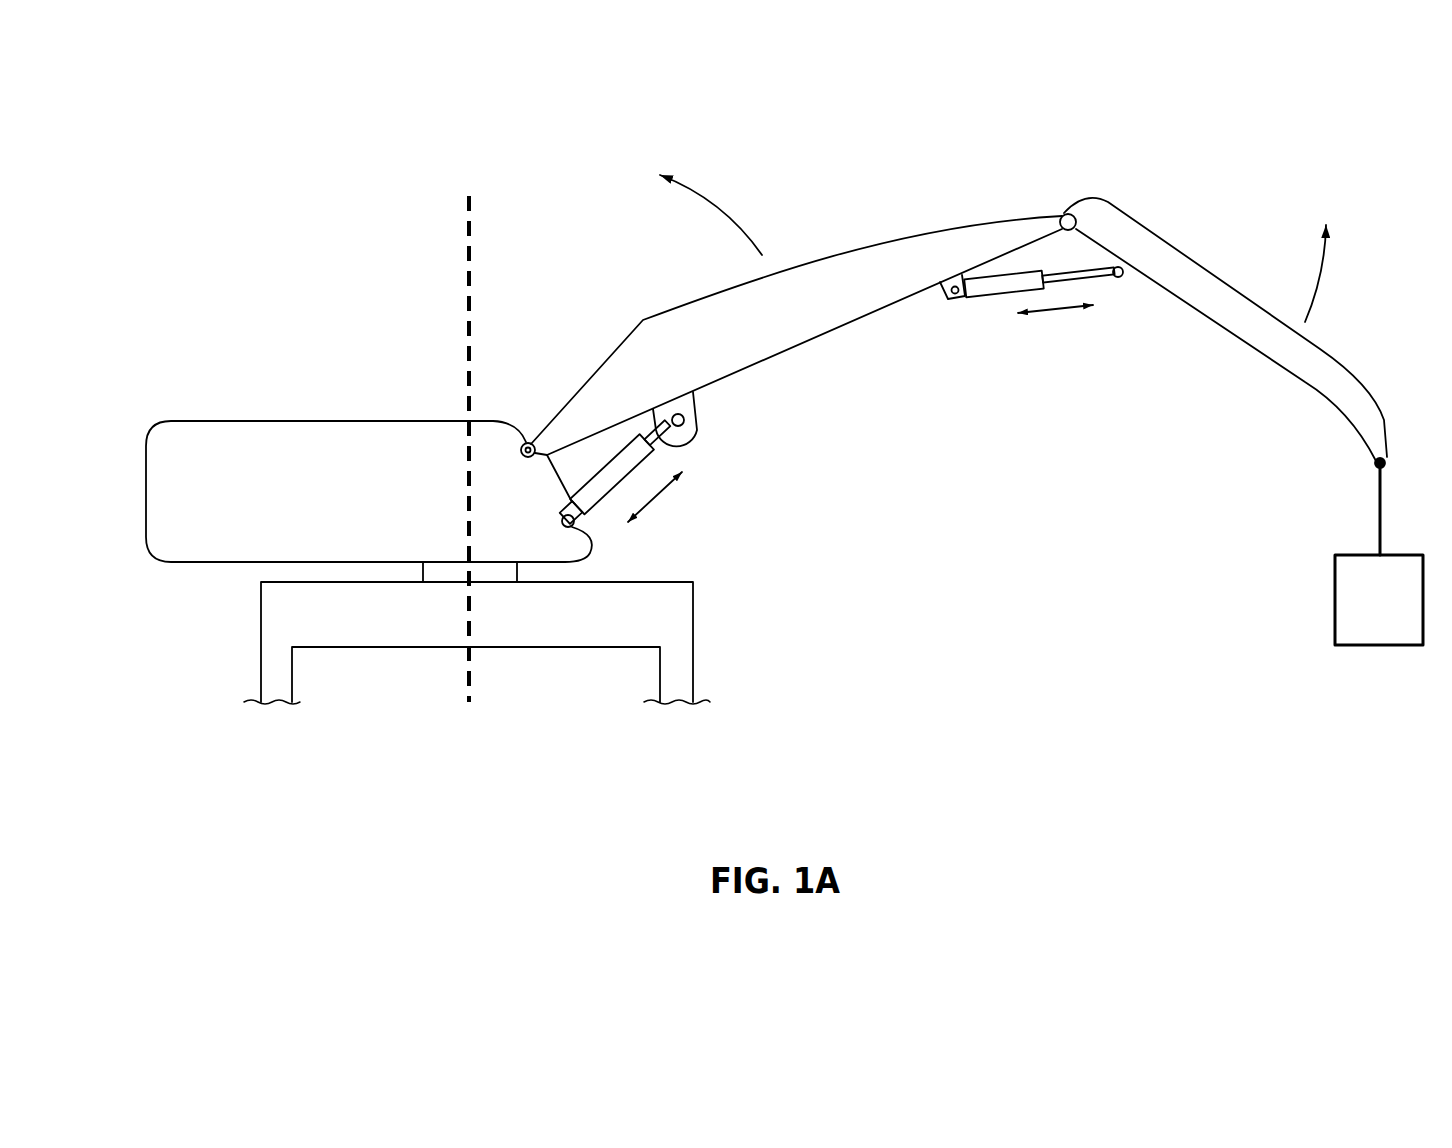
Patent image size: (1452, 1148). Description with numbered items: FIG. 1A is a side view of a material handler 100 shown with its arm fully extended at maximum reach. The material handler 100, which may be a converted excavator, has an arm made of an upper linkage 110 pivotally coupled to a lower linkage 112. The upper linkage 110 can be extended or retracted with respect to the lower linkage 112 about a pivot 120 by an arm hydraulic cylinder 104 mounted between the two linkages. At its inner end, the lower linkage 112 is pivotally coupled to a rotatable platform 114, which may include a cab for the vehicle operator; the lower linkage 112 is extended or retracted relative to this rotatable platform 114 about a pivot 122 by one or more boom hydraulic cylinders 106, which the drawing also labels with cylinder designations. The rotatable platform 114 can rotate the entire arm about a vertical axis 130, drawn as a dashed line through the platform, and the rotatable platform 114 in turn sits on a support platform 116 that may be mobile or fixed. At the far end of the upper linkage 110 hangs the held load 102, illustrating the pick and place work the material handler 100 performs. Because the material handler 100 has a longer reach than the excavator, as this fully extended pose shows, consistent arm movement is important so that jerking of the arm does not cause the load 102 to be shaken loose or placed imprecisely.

The material handler 100 is at (403, 262).
The load 102 is at (1335, 615).
The arm hydraulic cylinder 104 is at (998, 285).
The boom hydraulic cylinder 106 is at (652, 448).
The upper linkage 110 is at (1228, 304).
The lower linkage 112 is at (847, 303).
The rotatable platform 114 is at (267, 434).
The support platform 116 is at (415, 620).
The pivot 120 is at (1063, 215).
The pivot 122 is at (528, 442).
The vertical axis 130 is at (472, 207).